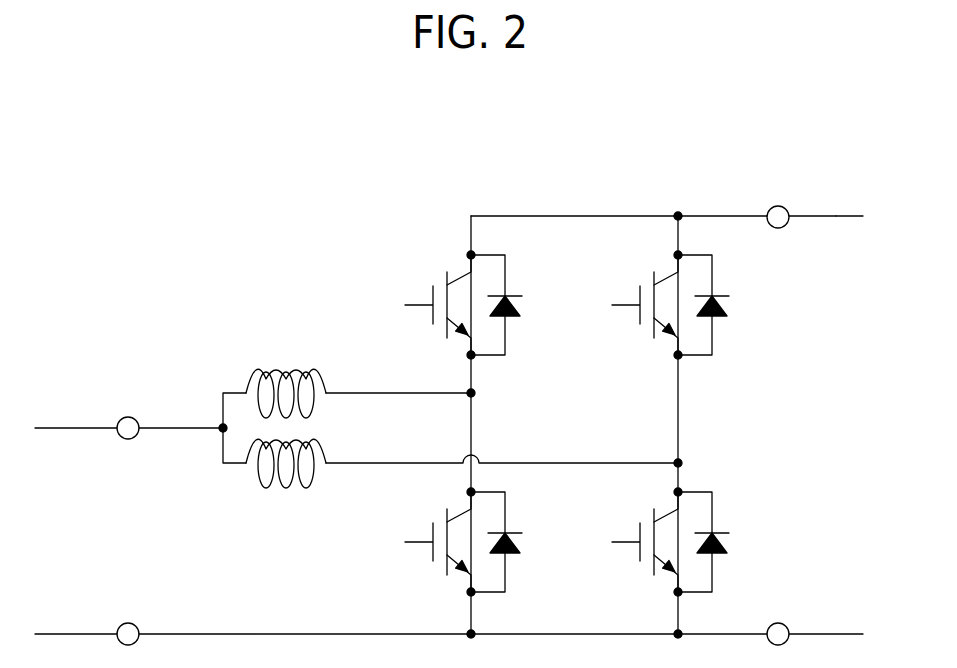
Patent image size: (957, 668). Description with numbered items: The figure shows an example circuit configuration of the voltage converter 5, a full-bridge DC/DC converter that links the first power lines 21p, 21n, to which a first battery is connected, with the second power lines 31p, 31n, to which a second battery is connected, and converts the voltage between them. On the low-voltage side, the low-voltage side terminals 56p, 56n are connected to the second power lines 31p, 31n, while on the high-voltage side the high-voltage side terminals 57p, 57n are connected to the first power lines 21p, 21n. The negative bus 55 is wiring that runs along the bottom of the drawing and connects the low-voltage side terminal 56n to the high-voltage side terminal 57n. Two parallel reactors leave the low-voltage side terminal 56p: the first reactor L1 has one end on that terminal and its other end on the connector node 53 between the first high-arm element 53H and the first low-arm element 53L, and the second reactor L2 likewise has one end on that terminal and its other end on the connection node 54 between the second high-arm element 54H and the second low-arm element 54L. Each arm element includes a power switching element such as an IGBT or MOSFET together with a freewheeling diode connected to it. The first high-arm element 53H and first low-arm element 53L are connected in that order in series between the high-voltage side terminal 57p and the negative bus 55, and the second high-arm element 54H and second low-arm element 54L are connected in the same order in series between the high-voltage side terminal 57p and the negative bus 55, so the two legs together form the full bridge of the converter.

The voltage converter 5 is at (216, 186).
The first power line 21p is at (844, 216).
The first power line 21n is at (848, 634).
The second power line 31p is at (50, 428).
The second power line 31n is at (54, 634).
The connector node 53 is at (475, 394).
The first high-arm element 53H is at (400, 281).
The first low-arm element 53L is at (388, 531).
The connection node 54 is at (682, 463).
The second high-arm element 54H is at (603, 285).
The second low-arm element 54L is at (604, 531).
The negative bus 55 is at (350, 634).
The low-voltage side terminal 56p is at (134, 418).
The low-voltage side terminal 56n is at (134, 624).
The high-voltage side terminal 57p is at (781, 207).
The high-voltage side terminal 57n is at (781, 624).
The first reactor L1 is at (300, 372).
The second reactor L2 is at (289, 488).